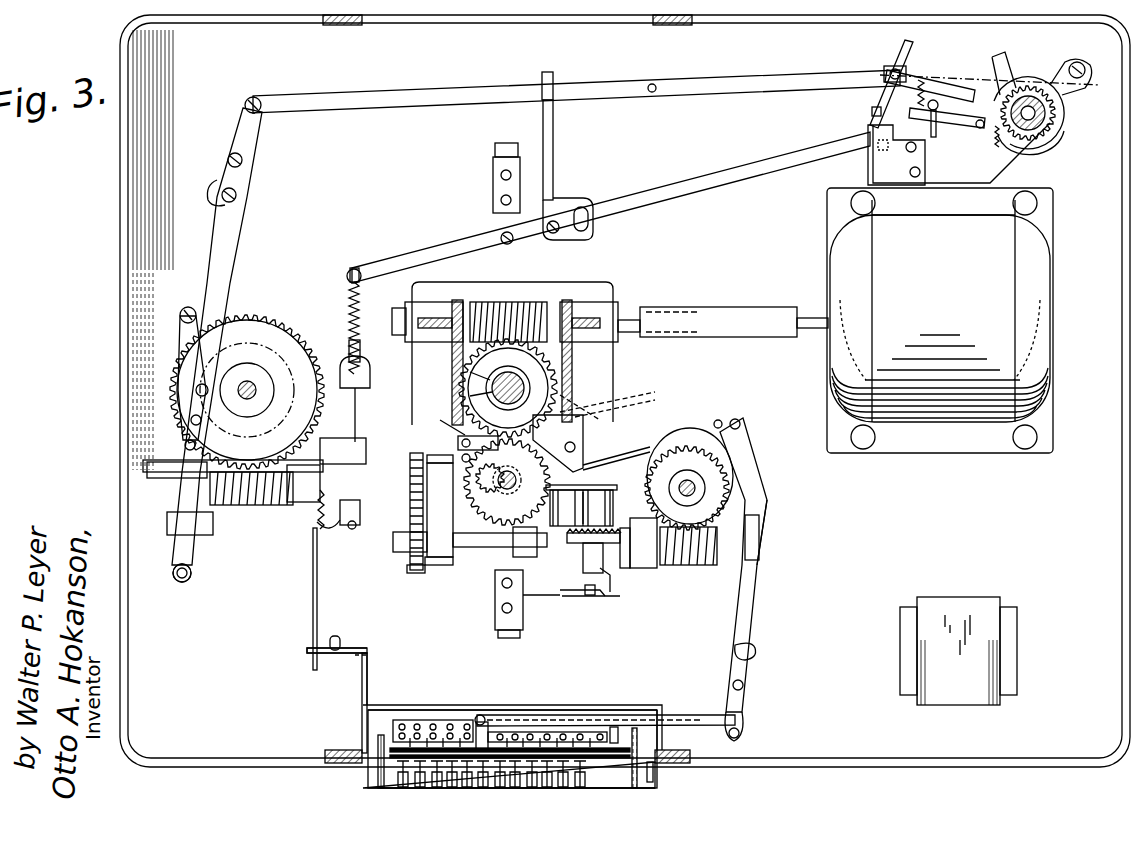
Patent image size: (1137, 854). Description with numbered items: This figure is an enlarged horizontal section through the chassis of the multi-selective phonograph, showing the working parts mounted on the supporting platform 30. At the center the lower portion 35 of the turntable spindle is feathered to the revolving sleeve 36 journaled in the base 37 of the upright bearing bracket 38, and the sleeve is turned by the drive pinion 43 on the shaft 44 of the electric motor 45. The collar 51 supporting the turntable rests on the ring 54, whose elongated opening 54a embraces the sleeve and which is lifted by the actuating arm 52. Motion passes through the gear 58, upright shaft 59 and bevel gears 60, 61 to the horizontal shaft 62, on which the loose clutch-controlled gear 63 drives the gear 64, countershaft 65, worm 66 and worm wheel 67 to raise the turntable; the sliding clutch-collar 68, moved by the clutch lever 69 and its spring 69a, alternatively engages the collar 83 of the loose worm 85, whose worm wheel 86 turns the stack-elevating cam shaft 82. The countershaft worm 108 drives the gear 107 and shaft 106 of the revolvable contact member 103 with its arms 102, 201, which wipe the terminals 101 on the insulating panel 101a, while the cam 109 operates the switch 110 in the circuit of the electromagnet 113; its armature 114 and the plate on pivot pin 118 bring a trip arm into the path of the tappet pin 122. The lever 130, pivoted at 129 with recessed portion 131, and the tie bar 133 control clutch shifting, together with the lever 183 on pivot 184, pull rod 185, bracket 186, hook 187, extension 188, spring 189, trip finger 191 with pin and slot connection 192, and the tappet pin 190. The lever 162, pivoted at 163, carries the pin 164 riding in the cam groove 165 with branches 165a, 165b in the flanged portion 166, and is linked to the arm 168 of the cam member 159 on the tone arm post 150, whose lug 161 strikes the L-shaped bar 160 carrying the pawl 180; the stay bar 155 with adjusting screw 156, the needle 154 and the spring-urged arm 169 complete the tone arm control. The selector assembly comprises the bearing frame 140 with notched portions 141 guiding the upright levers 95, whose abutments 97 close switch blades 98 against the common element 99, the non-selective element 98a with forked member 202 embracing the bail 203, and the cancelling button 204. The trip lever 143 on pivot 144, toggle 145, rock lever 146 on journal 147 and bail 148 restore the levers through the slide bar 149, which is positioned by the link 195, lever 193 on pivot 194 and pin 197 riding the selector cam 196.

The supporting platform 30 is at (625, 391).
The lower portion of spindle 35 is at (524, 390).
The revolving sleeve 36 is at (548, 372).
The base of bearing bracket 37 is at (600, 396).
The upright bearing bracket 38 is at (589, 312).
The drive pinion 43 is at (502, 353).
The motor shaft 44 is at (690, 338).
The electric motor 45 is at (940, 320).
The collar 51 is at (688, 482).
The actuating arm 52 is at (655, 392).
The ring 54 is at (470, 372).
The elongated opening 54a is at (470, 396).
The gear 58 is at (507, 482).
The upright shaft 59 is at (518, 478).
The bevel gear 60 is at (480, 495).
The bevel gear 61 is at (468, 488).
The horizontal shaft 62 is at (462, 460).
The clutch-controlled gear 63 is at (410, 512).
The gear 64 is at (412, 573).
The countershaft 65 is at (440, 566).
The worm 66 is at (688, 555).
The worm wheel 67 is at (740, 536).
The sliding clutch-collar 68 is at (328, 516).
The clutch lever 69 is at (352, 530).
The spring 69a is at (320, 530).
The cam shaft 82 is at (250, 386).
The collar 83 is at (310, 505).
The worm 85 is at (245, 505).
The worm wheel 86 is at (192, 404).
The upright lever 95 is at (370, 774).
The abutment 97 is at (520, 740).
The movable switch blade 98 is at (530, 760).
The non-selective switch element 98a is at (605, 740).
The stationary switch element 99 is at (578, 766).
The terminal 101 is at (555, 600).
The insulating panel 101a is at (648, 570).
The arm of contact member 102 is at (600, 592).
The revolvable contact member 103 is at (610, 595).
The shaft 106 is at (583, 560).
The gear 107 is at (612, 532).
The worm 108 is at (603, 490).
The cam 109 is at (541, 602).
The switch 110 is at (480, 548).
The electromagnet 113 is at (575, 492).
The armature 114 is at (455, 426).
The pivot pin 118 is at (584, 440).
The tappet pin 122 is at (458, 440).
The pivot 129 is at (184, 309).
The horizontally-swinging lever 130 is at (182, 338).
The recessed portion 131 is at (143, 464).
The tie bar 133 is at (165, 478).
The bearing frame 140 is at (958, 182).
The notched portions 141 is at (915, 98).
The trip lever 143 is at (312, 612).
The pivot 144 is at (872, 116).
The toggle 145 is at (310, 654).
The rock lever 146 is at (870, 166).
The journal 147 is at (362, 745).
The bail 148 is at (420, 740).
The slide bar 149 is at (484, 740).
The supporting post 150 is at (1055, 132).
The reproducing needle 154 is at (1058, 149).
The stay bar 155 is at (1022, 162).
The adjusting screw 156 is at (996, 144).
The cam member 159 is at (996, 57).
The L-shaped bar 160 is at (955, 88).
The radial lug 161 is at (1062, 66).
The horizontally-swinging lever 162 is at (232, 236).
The pivot 163 is at (173, 589).
The pin 164 is at (460, 98).
The cam groove 165 is at (300, 355).
The trailing branch of cam groove 165a is at (247, 376).
The leading branch of cam groove 165b is at (188, 435).
The lower flanged portion 166 is at (272, 320).
The arm 168 is at (1064, 100).
The horizontally-swinging arm 169 is at (957, 125).
The pendant pawl 180 is at (893, 72).
The horizontally-swinging lever 183 is at (725, 186).
The pivot 184 is at (510, 243).
The pull rod 185 is at (350, 292).
The bracket 186 is at (373, 372).
The hook 187 is at (358, 428).
The extension 188 is at (332, 438).
The spring 189 is at (375, 348).
The tappet pin 190 is at (652, 92).
The trip finger 191 is at (553, 150).
The pin and slot connection 192 is at (585, 208).
The horizontally-swinging lever 193 is at (762, 560).
The pivot 194 is at (746, 424).
The link 195 is at (620, 714).
The selector cam 196 is at (672, 432).
The pin 197 is at (770, 500).
The second arm of contact member 201 is at (588, 598).
The forked member 202 is at (636, 780).
The bail 203 is at (517, 796).
The cancelling button 204 is at (655, 778).